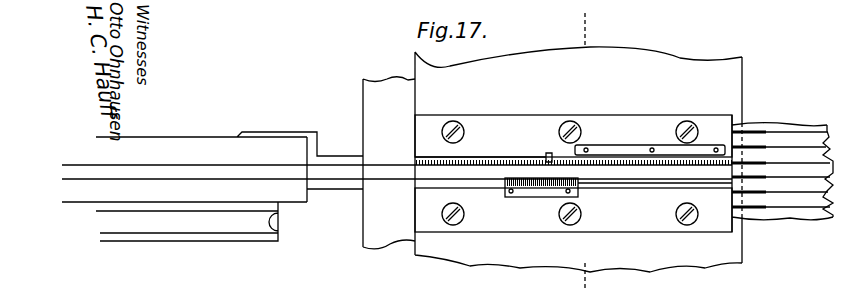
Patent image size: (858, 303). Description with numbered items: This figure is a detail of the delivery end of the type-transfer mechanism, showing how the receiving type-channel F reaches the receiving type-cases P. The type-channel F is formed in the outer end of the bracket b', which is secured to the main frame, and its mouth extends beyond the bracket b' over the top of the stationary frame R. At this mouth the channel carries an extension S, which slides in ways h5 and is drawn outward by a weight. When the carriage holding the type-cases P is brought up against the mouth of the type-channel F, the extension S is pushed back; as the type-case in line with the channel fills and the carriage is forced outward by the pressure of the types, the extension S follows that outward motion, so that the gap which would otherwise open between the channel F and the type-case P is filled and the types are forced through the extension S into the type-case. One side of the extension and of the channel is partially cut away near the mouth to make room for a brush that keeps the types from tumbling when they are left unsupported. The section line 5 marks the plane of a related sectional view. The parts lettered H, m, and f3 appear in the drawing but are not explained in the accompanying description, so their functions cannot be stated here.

The section-line 5 5 is at (585, 151).
The handle sleeve H is at (212, 167).
The bracket plate m is at (187, 227).
The receiving type-channel F is at (397, 168).
The bracket b' is at (389, 163).
The stationary frame R is at (578, 159).
The extension S is at (573, 176).
The rack bar f3 is at (574, 165).
The ways h5 is at (615, 164).
The type-cases P is at (782, 173).